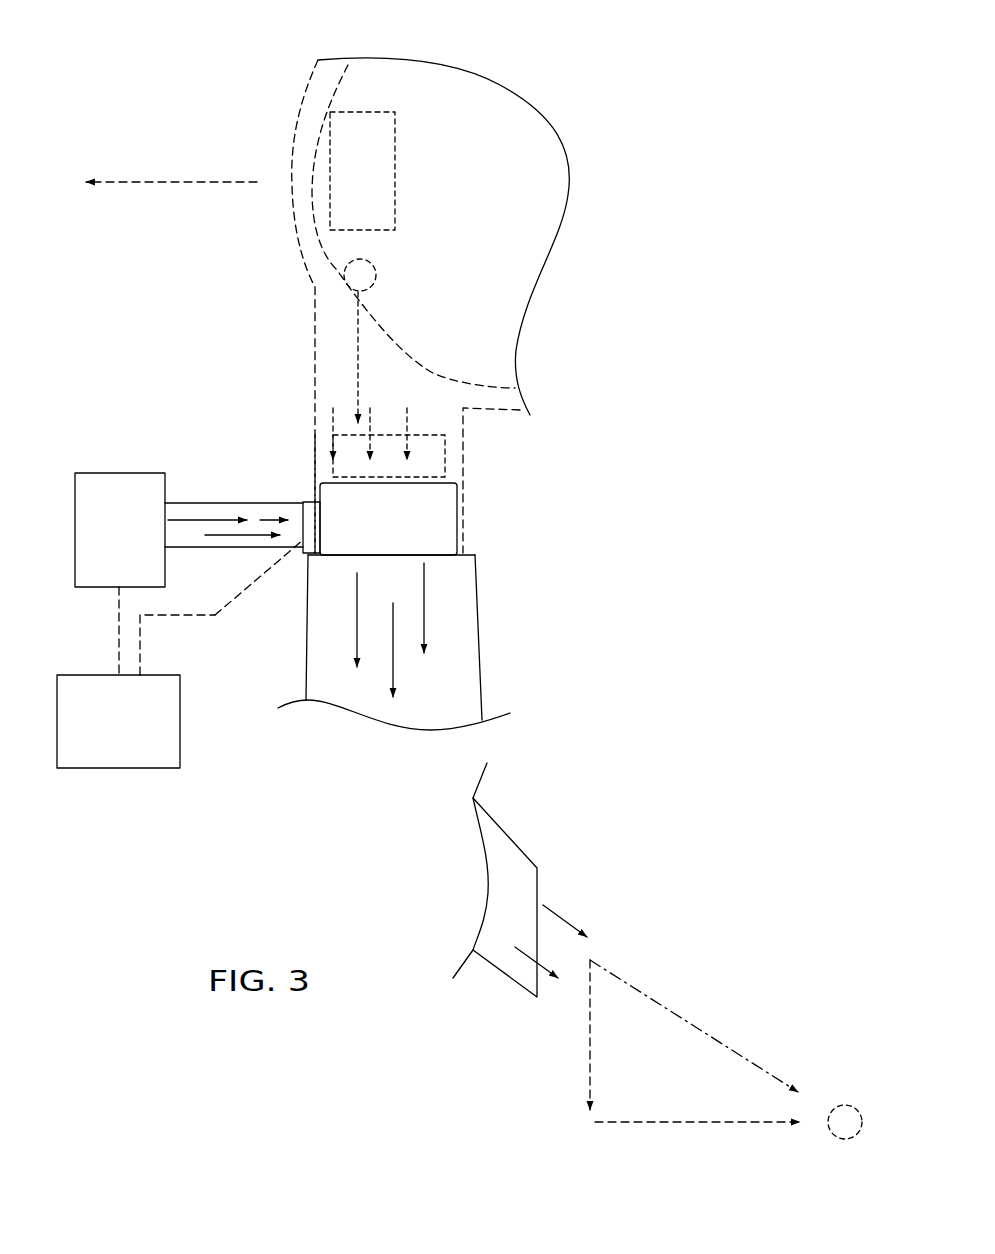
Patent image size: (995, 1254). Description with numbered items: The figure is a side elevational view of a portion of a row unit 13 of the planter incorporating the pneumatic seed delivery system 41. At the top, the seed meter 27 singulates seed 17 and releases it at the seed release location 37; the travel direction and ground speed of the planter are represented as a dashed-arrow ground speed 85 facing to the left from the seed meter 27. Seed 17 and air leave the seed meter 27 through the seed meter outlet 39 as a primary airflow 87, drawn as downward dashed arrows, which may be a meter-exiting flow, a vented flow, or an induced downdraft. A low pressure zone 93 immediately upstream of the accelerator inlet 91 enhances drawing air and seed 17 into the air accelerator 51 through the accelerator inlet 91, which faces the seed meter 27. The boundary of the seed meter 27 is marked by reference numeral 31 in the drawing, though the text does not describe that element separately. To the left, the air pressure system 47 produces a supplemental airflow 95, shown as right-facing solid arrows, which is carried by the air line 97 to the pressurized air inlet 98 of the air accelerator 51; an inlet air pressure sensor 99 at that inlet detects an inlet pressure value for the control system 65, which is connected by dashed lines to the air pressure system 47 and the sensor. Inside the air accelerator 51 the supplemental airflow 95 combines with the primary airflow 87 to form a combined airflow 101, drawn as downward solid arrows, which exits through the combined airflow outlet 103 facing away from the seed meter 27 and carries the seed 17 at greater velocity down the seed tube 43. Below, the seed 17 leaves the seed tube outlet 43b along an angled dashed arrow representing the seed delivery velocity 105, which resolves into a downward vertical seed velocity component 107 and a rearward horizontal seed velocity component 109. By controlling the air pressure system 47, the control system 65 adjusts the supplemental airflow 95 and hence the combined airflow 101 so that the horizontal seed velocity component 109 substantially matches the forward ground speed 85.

The row unit 13 is at (359, 276).
The seed meter 27 is at (484, 235).
The face shield / visor 31 is at (572, 247).
The seed release location 37 is at (397, 167).
The seed 17 is at (360, 273).
The ground speed 85 is at (175, 182).
The pneumatic seed delivery system 41 is at (147, 312).
The primary airflow 87 is at (333, 422).
The seed meter outlet 39 is at (468, 438).
The low pressure zone 93 is at (330, 467).
The accelerator inlet 91 is at (450, 483).
The air accelerator 51 is at (442, 498).
The inlet air pressure sensor 99 is at (303, 540).
The air line 97 is at (222, 503).
The supplemental airflow 95 is at (200, 515).
The air pressure system 47 is at (120, 492).
The control system 65 is at (115, 735).
The pressurized air inlet 98 is at (303, 543).
The combined airflow outlet 103 is at (433, 547).
The seed tube 43 is at (431, 638).
The combined airflow 101 is at (357, 623).
The seed tube outlet 43b is at (510, 835).
The seed delivery velocity 105 is at (685, 1023).
The vertical seed velocity component 107 is at (588, 1032).
The horizontal seed velocity component 109 is at (688, 1122).